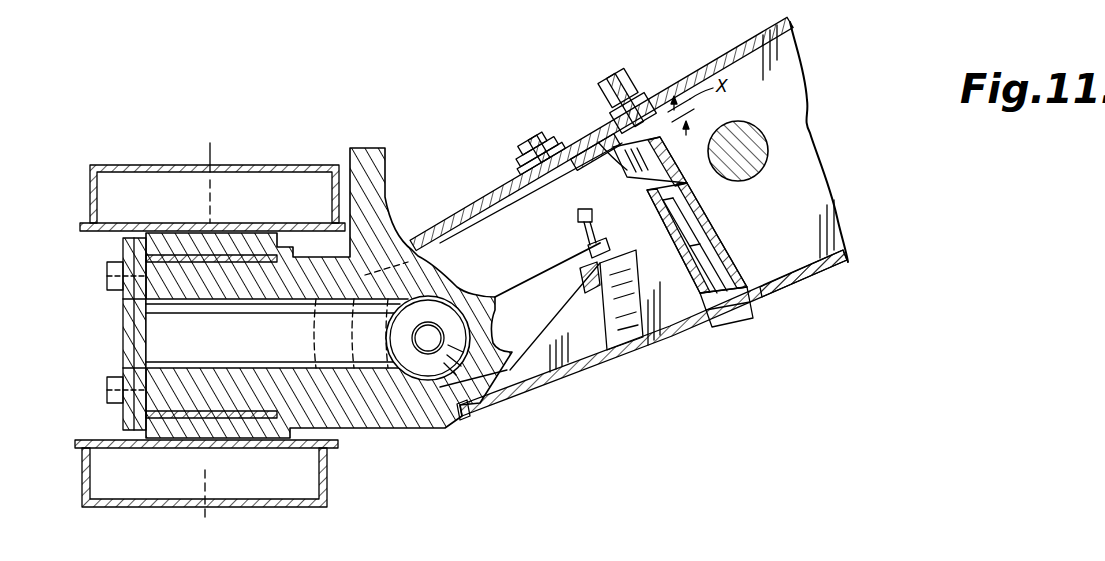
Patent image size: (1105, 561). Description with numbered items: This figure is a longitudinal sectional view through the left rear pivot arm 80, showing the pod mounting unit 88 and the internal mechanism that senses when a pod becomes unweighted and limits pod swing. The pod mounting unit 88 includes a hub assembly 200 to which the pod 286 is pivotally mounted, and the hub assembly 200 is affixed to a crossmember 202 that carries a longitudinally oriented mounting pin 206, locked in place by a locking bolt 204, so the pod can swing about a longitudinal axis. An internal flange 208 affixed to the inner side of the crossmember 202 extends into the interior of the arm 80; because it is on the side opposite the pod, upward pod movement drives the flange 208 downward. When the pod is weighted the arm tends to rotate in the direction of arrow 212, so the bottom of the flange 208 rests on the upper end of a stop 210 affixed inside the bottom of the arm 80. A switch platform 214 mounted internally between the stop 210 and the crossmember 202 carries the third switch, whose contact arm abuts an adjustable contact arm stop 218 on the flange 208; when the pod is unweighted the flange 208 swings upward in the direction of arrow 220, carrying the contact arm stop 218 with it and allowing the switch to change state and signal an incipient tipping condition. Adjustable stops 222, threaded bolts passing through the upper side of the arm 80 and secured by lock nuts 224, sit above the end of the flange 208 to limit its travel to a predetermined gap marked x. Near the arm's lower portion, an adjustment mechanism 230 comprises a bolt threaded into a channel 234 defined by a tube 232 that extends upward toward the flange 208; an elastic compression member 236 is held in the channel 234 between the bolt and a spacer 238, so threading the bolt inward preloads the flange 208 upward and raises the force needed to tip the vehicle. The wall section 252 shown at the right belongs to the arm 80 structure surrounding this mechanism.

The hydraulic cylinder 286 is at (265, 163).
The hub assembly 200 is at (150, 307).
The pod mounting unit 88 is at (108, 418).
The crossmember 202 is at (424, 408).
The locking bolt 204 is at (432, 330).
The mounting pin 206 is at (478, 420).
The internal flange 208 is at (508, 190).
The arrow 212 is at (517, 298).
The switch platform 214 is at (587, 358).
The adjustable contact arm stop 218 is at (585, 210).
The spacer 238 is at (600, 140).
The adjustable stops 222 is at (616, 74).
The lock nuts 224 is at (646, 92).
The left rear pivot arm 80 is at (734, 43).
The arrow 220 is at (708, 150).
The wall 252 is at (806, 114).
The stop 210 is at (698, 205).
The compression member 236 is at (718, 232).
The channel 234 is at (737, 257).
The adjustment mechanism 230 is at (727, 325).
The tube 232 is at (681, 290).